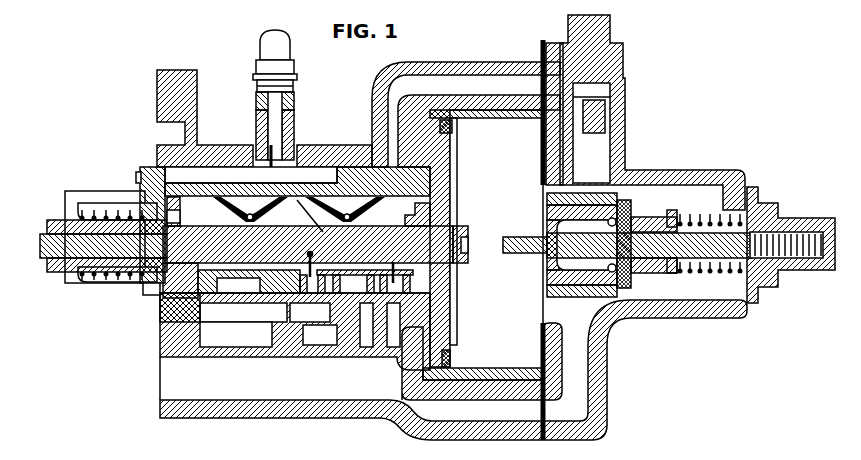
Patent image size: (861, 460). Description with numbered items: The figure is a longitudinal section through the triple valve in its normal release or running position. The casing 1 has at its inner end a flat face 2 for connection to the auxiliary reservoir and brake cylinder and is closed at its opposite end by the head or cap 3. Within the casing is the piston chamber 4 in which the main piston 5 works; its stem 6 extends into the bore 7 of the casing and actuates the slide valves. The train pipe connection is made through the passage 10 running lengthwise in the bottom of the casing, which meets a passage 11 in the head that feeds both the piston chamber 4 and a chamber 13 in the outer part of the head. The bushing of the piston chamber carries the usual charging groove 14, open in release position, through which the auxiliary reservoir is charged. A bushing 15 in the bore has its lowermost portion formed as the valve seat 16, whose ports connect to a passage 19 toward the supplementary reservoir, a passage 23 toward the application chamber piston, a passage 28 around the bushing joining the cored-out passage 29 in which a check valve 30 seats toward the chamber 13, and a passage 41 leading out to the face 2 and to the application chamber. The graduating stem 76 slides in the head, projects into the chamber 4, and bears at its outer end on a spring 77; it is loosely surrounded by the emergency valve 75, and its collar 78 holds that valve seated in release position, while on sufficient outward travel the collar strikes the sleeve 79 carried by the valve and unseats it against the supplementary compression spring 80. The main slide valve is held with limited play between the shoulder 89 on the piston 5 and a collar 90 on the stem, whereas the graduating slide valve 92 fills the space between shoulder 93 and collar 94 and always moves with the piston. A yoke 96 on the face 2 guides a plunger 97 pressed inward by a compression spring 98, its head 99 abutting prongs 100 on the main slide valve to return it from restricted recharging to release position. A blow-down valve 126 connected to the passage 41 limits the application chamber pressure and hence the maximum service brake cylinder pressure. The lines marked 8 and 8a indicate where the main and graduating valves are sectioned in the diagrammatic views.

The casing 1 is at (362, 146).
The flat face 2 is at (157, 96).
The head or cap 3 is at (616, 146).
The piston chamber 4 is at (526, 240).
The main piston 5 is at (443, 153).
The piston stem 6 is at (295, 244).
The bore of the casing 7 is at (250, 212).
The section line 8— 8 is at (170, 313).
The section line 8ª—8ª 8a is at (360, 262).
The train pipe passage 10 is at (453, 370).
The passage in head 11 is at (577, 360).
The train pipe chamber 13 is at (766, 245).
The charging groove 14 is at (457, 112).
The bushing 15 is at (343, 166).
The valve seat 16 is at (173, 331).
The passage 19 is at (295, 331).
The passage 23 is at (320, 335).
The passage 28 is at (297, 181).
The cored-out passage 29 is at (466, 114).
The check valve 30 is at (592, 119).
The longitudinal passage 41 is at (251, 175).
The emergency valve 75 is at (630, 210).
The graduating stem 76 is at (533, 251).
The spring 77 is at (790, 232).
The collar or enlargement 78 is at (643, 276).
The sleeve 79 is at (673, 211).
The supplementary compression spring 80 is at (716, 213).
The shoulder 89 is at (437, 283).
The collar 90 is at (188, 212).
The graduating slide valve 92 is at (315, 262).
The shoulder 93 is at (405, 214).
The collar 94 is at (329, 214).
The yoke 96 is at (65, 203).
The plunger 97 is at (67, 271).
The compression spring 98 is at (100, 216).
The head 99 is at (145, 290).
The projections or prongs 100 is at (185, 294).
The blow-down valve 126 is at (293, 119).